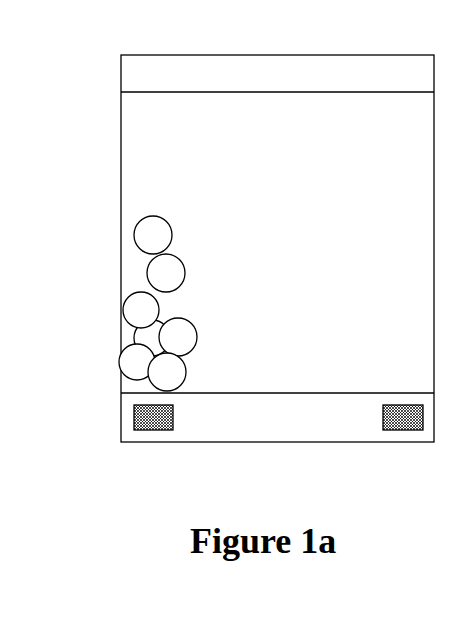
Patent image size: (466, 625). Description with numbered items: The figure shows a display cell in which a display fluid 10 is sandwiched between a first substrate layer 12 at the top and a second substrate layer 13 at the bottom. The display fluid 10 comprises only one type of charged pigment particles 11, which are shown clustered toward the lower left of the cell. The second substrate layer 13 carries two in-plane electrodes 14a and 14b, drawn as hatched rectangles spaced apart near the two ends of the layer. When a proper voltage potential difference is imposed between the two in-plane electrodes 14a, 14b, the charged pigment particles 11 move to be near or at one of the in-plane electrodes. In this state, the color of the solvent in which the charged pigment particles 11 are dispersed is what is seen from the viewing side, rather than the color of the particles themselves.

The display fluid 10 is at (170, 167).
The charged pigment particles 11 is at (158, 260).
The first substrate layer 12 is at (121, 79).
The second substrate layer 13 is at (121, 418).
The in-plane electrode 14a is at (158, 431).
The in-plane electrode 14b is at (397, 431).